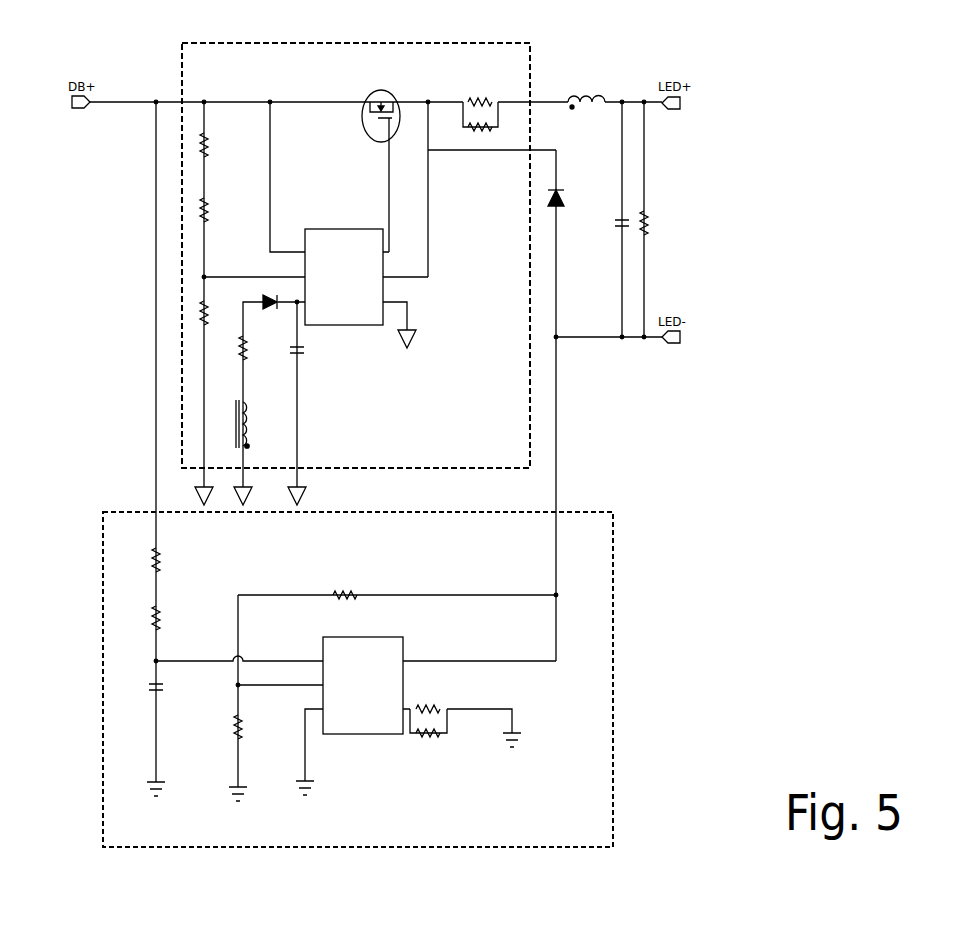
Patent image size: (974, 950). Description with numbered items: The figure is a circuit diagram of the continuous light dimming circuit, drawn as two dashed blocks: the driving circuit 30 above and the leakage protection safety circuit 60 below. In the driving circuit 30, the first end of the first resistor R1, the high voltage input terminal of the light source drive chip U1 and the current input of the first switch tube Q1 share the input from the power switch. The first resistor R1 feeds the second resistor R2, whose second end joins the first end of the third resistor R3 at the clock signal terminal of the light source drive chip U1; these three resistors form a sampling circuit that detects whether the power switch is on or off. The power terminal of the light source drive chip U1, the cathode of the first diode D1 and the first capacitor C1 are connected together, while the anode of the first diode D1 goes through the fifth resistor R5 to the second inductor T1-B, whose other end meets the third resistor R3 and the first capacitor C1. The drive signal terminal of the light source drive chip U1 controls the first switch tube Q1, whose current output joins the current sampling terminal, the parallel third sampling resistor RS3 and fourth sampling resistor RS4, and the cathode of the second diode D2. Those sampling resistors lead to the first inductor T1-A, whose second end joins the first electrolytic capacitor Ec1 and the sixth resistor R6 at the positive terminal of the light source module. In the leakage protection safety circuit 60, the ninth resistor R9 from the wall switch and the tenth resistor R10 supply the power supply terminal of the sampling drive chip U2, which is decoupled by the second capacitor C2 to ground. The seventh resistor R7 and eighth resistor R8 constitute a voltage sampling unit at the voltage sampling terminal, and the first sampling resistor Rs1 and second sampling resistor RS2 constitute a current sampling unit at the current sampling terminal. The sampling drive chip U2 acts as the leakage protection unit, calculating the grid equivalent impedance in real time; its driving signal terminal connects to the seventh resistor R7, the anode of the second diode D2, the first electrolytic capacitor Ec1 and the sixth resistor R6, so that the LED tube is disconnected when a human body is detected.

The driving circuit 30 is at (421, 43).
The leakage protection safety circuit 60 is at (613, 627).
The first resistor R1 is at (213, 145).
The second resistor R2 is at (213, 210).
The third resistor R3 is at (213, 313).
The fifth resistor R5 is at (252, 348).
The sixth resistor R6 is at (653, 223).
The seventh resistor R7 is at (345, 587).
The eighth resistor R8 is at (247, 727).
The ninth resistor R9 is at (165, 560).
The tenth resistor R10 is at (169, 618).
The second sampling resistor RS2 is at (430, 699).
The third sampling resistor RS3 is at (481, 135).
The fourth sampling resistor RS4 is at (481, 92).
The first sampling resistor Rs1 is at (429, 742).
The first capacitor C1 is at (290, 349).
The second capacitor C2 is at (148, 688).
The first electrolytic capacitor Ec1 is at (608, 224).
The first diode D1 is at (268, 311).
The second diode D2 is at (566, 198).
The first switch tube Q1 is at (381, 162).
The light source drive chip U1 is at (344, 268).
The sampling drive chip U2 is at (363, 676).
The first inductor T1-A is at (605, 91).
The second inductor T1-B is at (225, 424).